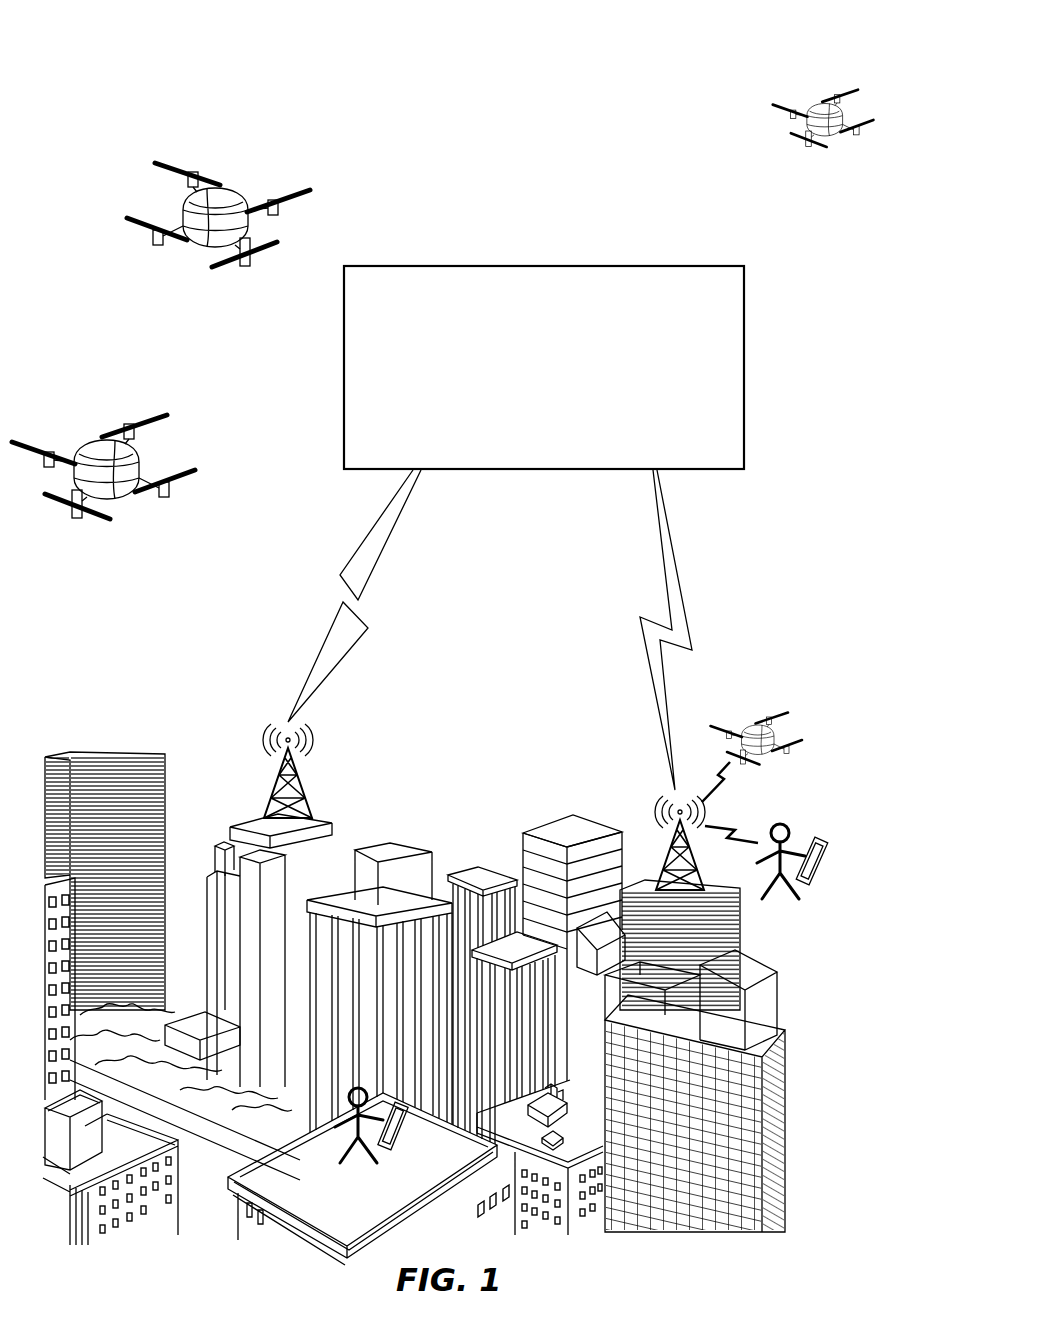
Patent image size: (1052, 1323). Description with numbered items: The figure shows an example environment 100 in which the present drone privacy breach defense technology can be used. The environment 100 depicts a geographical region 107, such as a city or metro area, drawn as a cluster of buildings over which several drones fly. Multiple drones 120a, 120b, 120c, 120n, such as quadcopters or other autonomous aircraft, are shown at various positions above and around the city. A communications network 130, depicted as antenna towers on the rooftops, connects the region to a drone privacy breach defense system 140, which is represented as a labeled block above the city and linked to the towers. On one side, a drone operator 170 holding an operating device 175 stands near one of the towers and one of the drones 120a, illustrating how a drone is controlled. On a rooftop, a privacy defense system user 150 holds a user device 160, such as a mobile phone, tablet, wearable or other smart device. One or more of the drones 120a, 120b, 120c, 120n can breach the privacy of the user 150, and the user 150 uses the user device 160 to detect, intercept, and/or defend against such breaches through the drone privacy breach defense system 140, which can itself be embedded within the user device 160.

The environment 100 is at (104, 86).
The geographical region 107 is at (834, 745).
The drone 120a is at (742, 725).
The drone 120b is at (238, 196).
The drone 120c is at (815, 108).
The drone 120n is at (95, 452).
The communications network 130 is at (305, 780).
The drone privacy breach defense system 140 is at (516, 528).
The privacy defense system user 150 is at (345, 1164).
The user device 160 is at (406, 1143).
The drone operator 170 is at (773, 900).
The operating device 175 is at (830, 865).